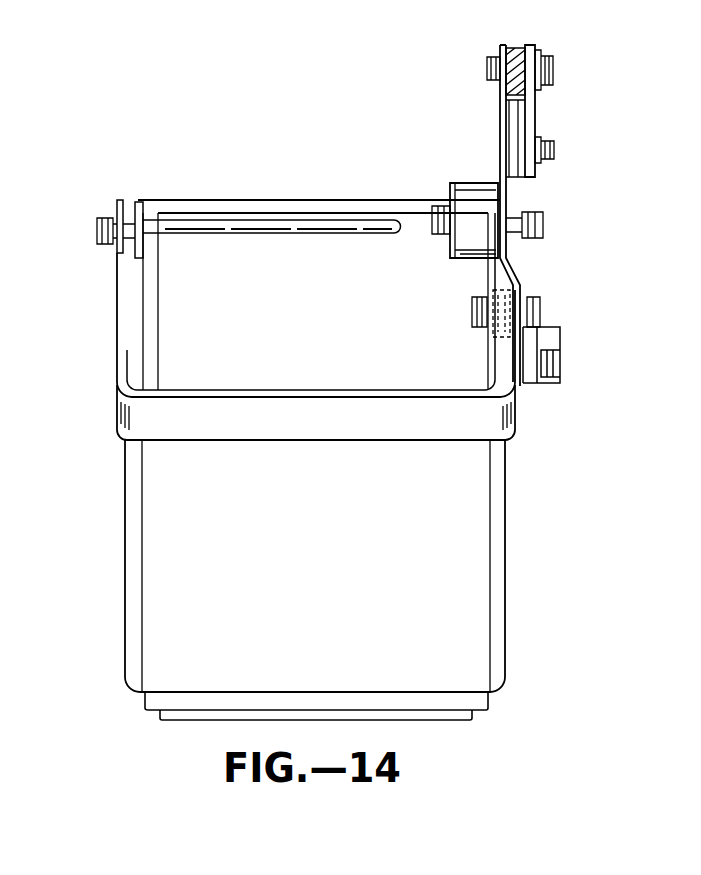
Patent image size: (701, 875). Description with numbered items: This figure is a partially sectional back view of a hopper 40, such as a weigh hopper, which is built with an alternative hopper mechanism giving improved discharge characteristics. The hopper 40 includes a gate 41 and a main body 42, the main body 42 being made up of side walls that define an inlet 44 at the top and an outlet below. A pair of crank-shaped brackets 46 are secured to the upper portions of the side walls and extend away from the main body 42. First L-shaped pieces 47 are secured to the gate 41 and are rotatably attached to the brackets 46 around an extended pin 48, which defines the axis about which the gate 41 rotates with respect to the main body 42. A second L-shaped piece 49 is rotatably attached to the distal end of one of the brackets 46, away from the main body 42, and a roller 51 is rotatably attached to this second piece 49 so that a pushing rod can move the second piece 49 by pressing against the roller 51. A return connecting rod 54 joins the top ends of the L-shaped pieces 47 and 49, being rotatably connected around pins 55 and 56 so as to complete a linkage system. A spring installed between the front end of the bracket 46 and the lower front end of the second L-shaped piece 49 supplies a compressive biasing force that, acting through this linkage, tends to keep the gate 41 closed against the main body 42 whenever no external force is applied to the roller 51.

The hopper 40 is at (157, 88).
The gate 41 is at (480, 500).
The main body 42 is at (168, 318).
The inlet 44 is at (340, 200).
The crank-shaped brackets 46 is at (140, 200).
The first L-shaped pieces 47 is at (177, 427).
The extended pin 48 is at (254, 218).
The second L-shaped piece 49 is at (500, 136).
The roller 51 is at (488, 198).
The return connecting rod 54 is at (535, 107).
The pin 55 is at (555, 60).
The pin 56 is at (558, 150).